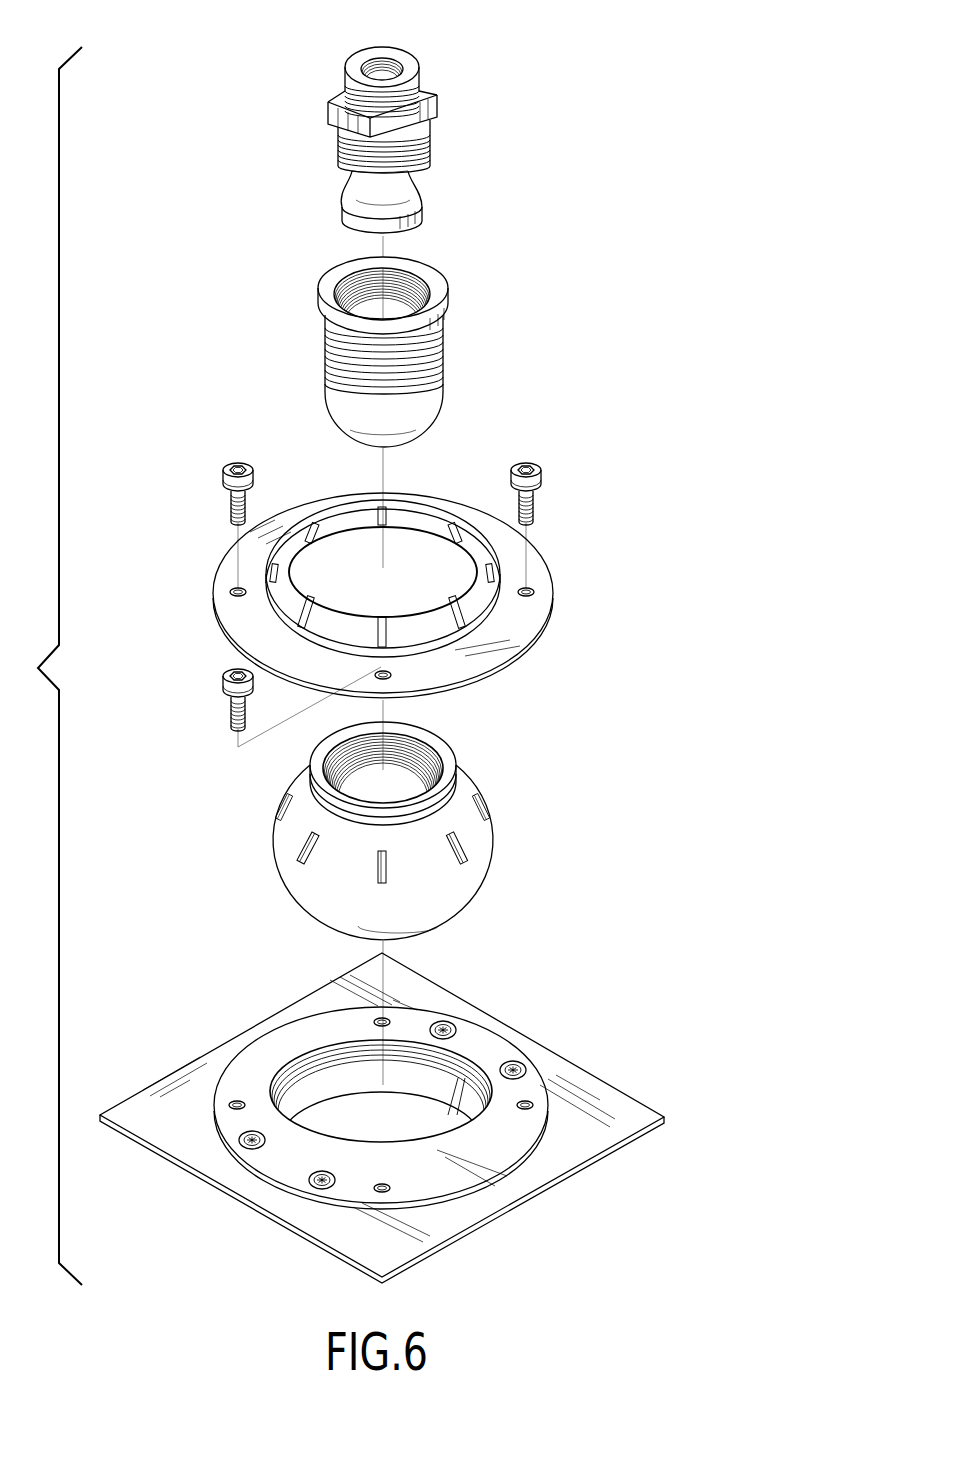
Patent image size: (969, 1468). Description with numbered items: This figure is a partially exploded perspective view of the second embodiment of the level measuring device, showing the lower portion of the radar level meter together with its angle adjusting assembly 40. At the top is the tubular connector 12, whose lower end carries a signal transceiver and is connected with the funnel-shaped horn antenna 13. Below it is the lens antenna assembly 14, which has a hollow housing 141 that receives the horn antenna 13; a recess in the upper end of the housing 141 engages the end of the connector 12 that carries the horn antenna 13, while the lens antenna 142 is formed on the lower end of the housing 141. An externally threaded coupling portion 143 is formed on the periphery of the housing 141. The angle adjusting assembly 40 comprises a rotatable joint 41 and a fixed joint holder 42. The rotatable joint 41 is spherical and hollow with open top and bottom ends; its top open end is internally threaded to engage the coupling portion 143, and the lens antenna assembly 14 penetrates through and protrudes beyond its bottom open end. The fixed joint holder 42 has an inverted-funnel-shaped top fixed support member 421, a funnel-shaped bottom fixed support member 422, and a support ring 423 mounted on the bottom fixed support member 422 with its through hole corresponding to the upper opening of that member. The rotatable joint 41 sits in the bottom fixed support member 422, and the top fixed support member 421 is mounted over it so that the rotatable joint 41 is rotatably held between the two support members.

The connector 12 is at (429, 121).
The horn antenna 13 is at (358, 188).
The lens antenna assembly 14 is at (407, 355).
The housing 141 is at (327, 295).
The lens antenna 142 is at (347, 412).
The coupling portion 143 is at (333, 355).
The angle adjusting assembly 40 is at (420, 873).
The rotatable joint 41 is at (287, 845).
The fixed joint holder 42 is at (378, 1118).
The top fixed support member 421 is at (250, 628).
The bottom fixed support member 422 is at (333, 1075).
The support ring 423 is at (237, 1078).